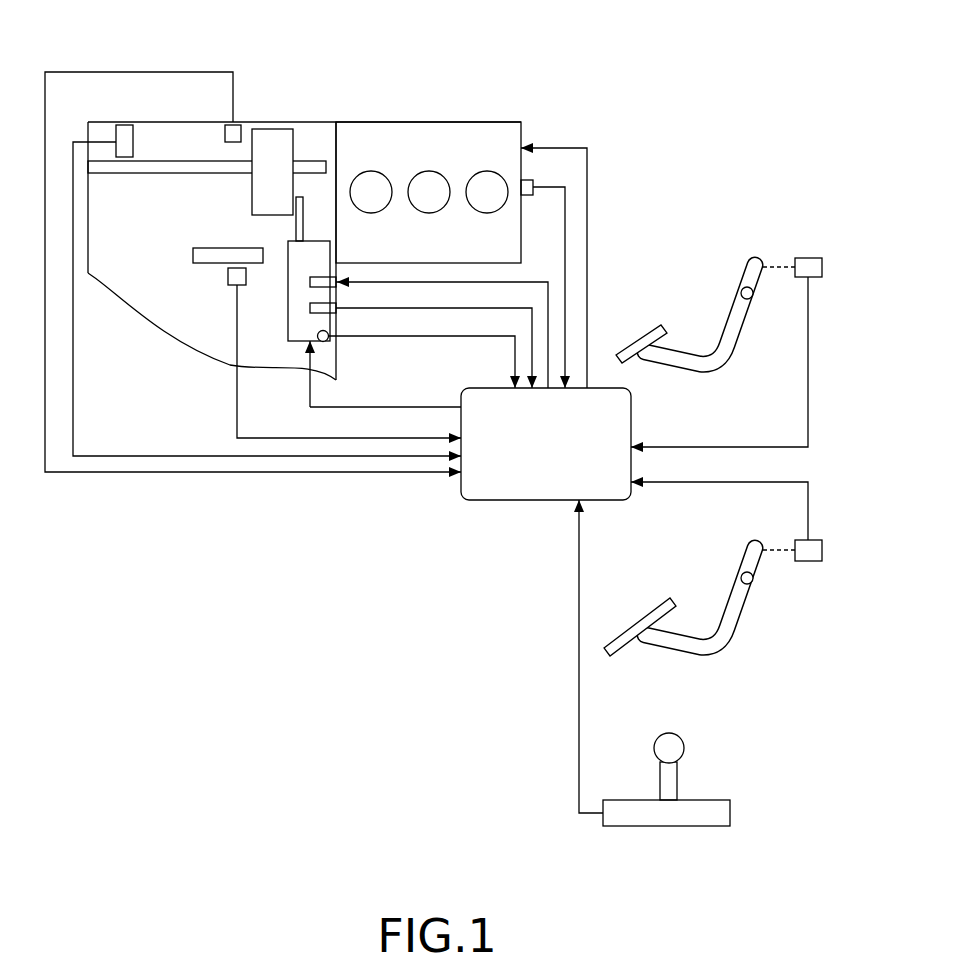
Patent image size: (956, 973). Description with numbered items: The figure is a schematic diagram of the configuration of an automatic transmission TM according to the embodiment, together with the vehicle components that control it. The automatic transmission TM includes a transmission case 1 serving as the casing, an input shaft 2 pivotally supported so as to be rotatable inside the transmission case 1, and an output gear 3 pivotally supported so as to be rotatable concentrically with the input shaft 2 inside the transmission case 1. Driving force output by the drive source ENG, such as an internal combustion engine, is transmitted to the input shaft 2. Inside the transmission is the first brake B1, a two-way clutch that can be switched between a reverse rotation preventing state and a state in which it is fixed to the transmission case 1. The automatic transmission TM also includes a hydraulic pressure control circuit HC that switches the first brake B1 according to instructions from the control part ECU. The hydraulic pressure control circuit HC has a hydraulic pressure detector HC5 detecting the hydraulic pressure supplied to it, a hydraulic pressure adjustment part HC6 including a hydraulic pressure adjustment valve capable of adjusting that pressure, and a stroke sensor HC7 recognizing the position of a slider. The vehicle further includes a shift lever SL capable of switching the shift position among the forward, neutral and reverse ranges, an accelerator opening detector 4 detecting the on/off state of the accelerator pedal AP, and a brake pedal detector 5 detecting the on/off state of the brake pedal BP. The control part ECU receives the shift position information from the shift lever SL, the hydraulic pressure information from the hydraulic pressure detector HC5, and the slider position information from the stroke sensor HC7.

The transmission case 1 is at (252, 122).
The input shaft 2 is at (118, 168).
The output gear 3 is at (207, 256).
The accelerator opening detector 4 is at (808, 565).
The brake pedal detector 5 is at (808, 258).
The automatic transmission TM is at (289, 102).
The drive source ENG is at (458, 122).
The first brake B1 is at (283, 181).
The hydraulic pressure control circuit HC is at (300, 308).
The hydraulic pressure detector HC5 is at (318, 309).
The hydraulic pressure adjustment part HC6 is at (318, 277).
The stroke sensor HC7 is at (328, 339).
The control part ECU is at (546, 444).
The brake pedal BP is at (735, 360).
The accelerator pedal AP is at (735, 645).
The shift lever SL is at (670, 790).